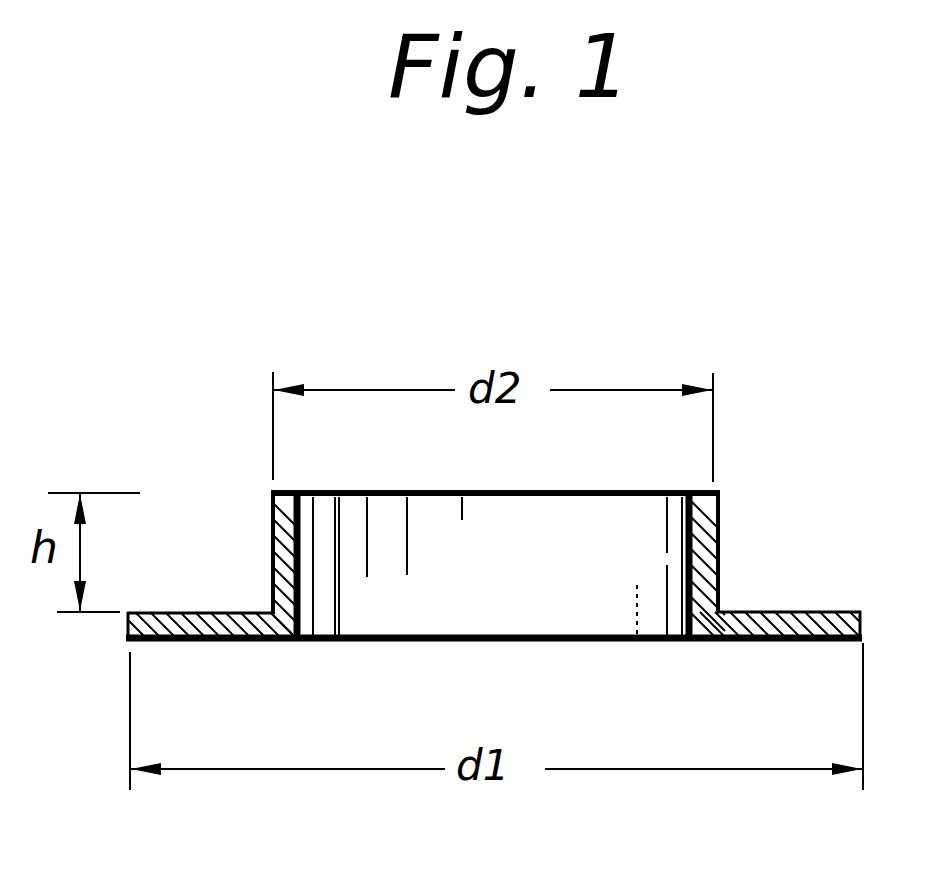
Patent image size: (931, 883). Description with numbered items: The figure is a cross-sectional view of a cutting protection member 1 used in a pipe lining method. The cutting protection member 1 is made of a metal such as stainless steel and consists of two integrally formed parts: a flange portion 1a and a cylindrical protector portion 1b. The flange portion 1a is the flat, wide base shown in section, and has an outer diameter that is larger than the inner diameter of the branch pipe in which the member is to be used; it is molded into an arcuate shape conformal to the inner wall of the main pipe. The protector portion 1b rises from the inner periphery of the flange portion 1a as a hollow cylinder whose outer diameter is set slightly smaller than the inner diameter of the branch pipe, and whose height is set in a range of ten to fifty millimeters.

The cutting protection member 1 is at (745, 484).
The flange portion 1a is at (730, 647).
The cylindrical protector portion 1b is at (532, 568).